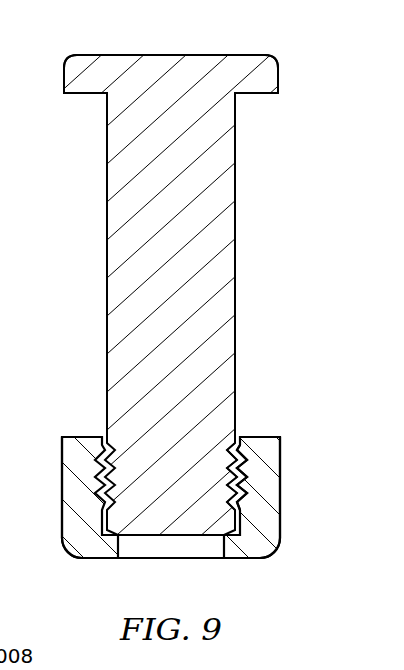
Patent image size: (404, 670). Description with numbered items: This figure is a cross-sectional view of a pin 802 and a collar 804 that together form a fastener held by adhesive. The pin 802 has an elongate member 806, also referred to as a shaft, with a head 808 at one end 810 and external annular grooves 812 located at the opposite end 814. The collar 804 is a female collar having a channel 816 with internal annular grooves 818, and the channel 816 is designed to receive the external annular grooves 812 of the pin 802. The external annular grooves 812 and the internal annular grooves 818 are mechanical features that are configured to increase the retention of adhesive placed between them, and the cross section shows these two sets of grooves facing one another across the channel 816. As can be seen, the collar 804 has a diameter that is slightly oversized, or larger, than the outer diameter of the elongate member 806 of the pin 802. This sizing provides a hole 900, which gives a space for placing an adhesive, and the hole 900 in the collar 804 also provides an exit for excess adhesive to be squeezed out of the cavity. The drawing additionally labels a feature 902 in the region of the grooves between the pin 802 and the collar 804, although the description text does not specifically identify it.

The pin 802 is at (225, 188).
The collar 804 is at (67, 553).
The elongate member 806 is at (107, 145).
The head 808 is at (68, 60).
The end 810 is at (117, 55).
The external annular grooves 812 is at (254, 449).
The end 814 is at (205, 539).
The channel 816 is at (93, 458).
The internal annular grooves 818 is at (240, 511).
The hole 900 is at (145, 547).
The nut threads 902 is at (253, 471).